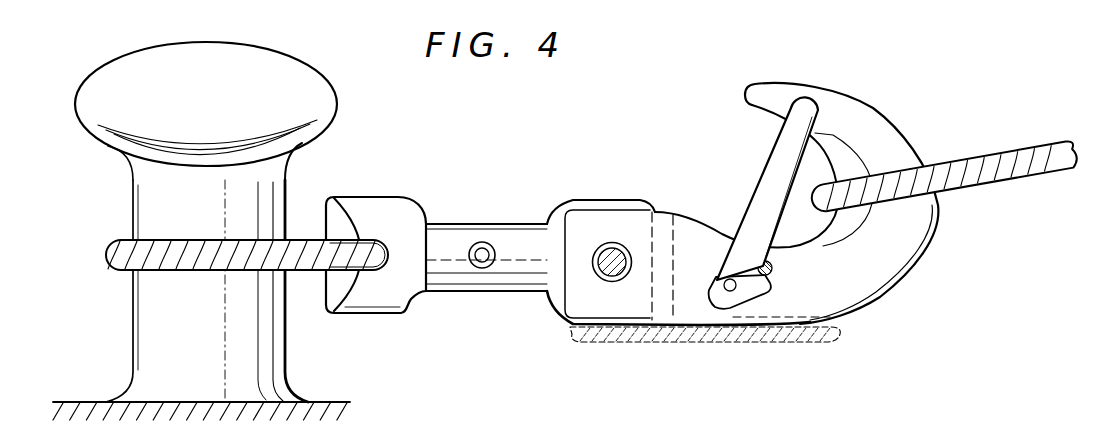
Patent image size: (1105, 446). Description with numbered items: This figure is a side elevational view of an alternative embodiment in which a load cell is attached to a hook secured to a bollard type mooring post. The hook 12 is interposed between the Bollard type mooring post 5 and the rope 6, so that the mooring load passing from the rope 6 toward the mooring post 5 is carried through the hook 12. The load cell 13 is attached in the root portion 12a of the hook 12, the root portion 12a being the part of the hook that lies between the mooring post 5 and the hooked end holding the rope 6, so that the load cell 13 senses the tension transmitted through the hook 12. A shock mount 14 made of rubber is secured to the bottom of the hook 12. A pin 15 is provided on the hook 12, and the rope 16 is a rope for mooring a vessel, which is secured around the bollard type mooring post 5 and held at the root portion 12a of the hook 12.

The Bollard type mooring post 5 is at (246, 44).
The rope 6 is at (991, 164).
The hook 12 is at (684, 195).
The root portion 12a is at (442, 232).
The load cell 13 is at (488, 266).
The shock mount 14 is at (730, 342).
The pin 15 is at (598, 273).
The rope 16 is at (306, 263).